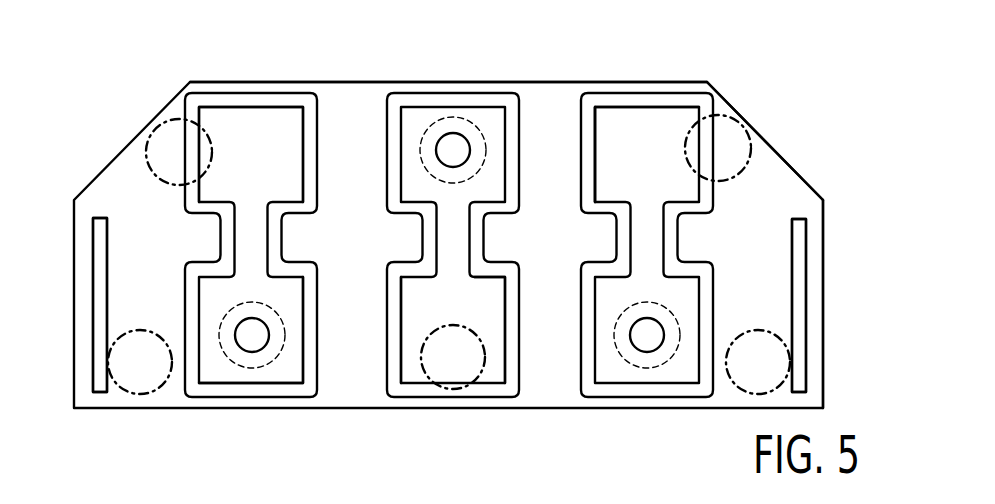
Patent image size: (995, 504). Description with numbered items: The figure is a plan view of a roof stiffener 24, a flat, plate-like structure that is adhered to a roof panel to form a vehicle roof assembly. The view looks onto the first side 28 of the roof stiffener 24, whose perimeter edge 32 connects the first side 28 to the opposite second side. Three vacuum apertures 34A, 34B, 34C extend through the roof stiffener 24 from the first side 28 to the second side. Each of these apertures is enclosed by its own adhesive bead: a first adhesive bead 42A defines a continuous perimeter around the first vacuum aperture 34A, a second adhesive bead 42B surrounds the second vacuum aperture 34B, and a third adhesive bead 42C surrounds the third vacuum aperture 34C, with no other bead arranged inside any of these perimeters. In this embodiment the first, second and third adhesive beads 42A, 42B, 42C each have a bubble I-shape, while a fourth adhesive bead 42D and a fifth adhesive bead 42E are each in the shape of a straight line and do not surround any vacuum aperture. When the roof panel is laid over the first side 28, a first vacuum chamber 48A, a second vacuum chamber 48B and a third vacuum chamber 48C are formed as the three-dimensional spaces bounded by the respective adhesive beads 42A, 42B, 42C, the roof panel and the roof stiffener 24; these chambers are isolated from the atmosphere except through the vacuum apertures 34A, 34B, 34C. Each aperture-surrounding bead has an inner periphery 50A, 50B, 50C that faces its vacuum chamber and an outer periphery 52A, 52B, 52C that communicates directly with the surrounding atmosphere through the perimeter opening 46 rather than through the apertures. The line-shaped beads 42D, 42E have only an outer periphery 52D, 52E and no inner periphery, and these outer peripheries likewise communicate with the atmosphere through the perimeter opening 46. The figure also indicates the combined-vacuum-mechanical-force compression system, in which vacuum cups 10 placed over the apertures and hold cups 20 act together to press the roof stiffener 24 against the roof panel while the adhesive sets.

The vacuum cup 10 is at (422, 165).
The hold cup 20 is at (128, 133).
The roof stiffener 24 is at (70, 151).
The first side 28 is at (777, 165).
The perimeter edge 32 is at (825, 286).
The first vacuum aperture 34A is at (253, 330).
The second vacuum aperture 34B is at (457, 143).
The third vacuum aperture 34C is at (646, 336).
The first adhesive bead 42A is at (198, 392).
The second adhesive bead 42B is at (513, 387).
The third adhesive bead 42C is at (657, 97).
The fourth adhesive bead 42D is at (98, 297).
The fifth adhesive bead 42E is at (797, 310).
The perimeter opening 46 is at (344, 78).
The first vacuum chamber 48A is at (297, 368).
The second vacuum chamber 48B is at (484, 295).
The third vacuum chamber 48C is at (624, 124).
The inner periphery 50A is at (225, 108).
The inner periphery 50B is at (402, 325).
The inner periphery 50C is at (597, 178).
The outer periphery 52A is at (222, 95).
The outer periphery 52B is at (388, 272).
The outer periphery 52C is at (580, 128).
The outer periphery 52D is at (92, 260).
The outer periphery 52E is at (790, 260).